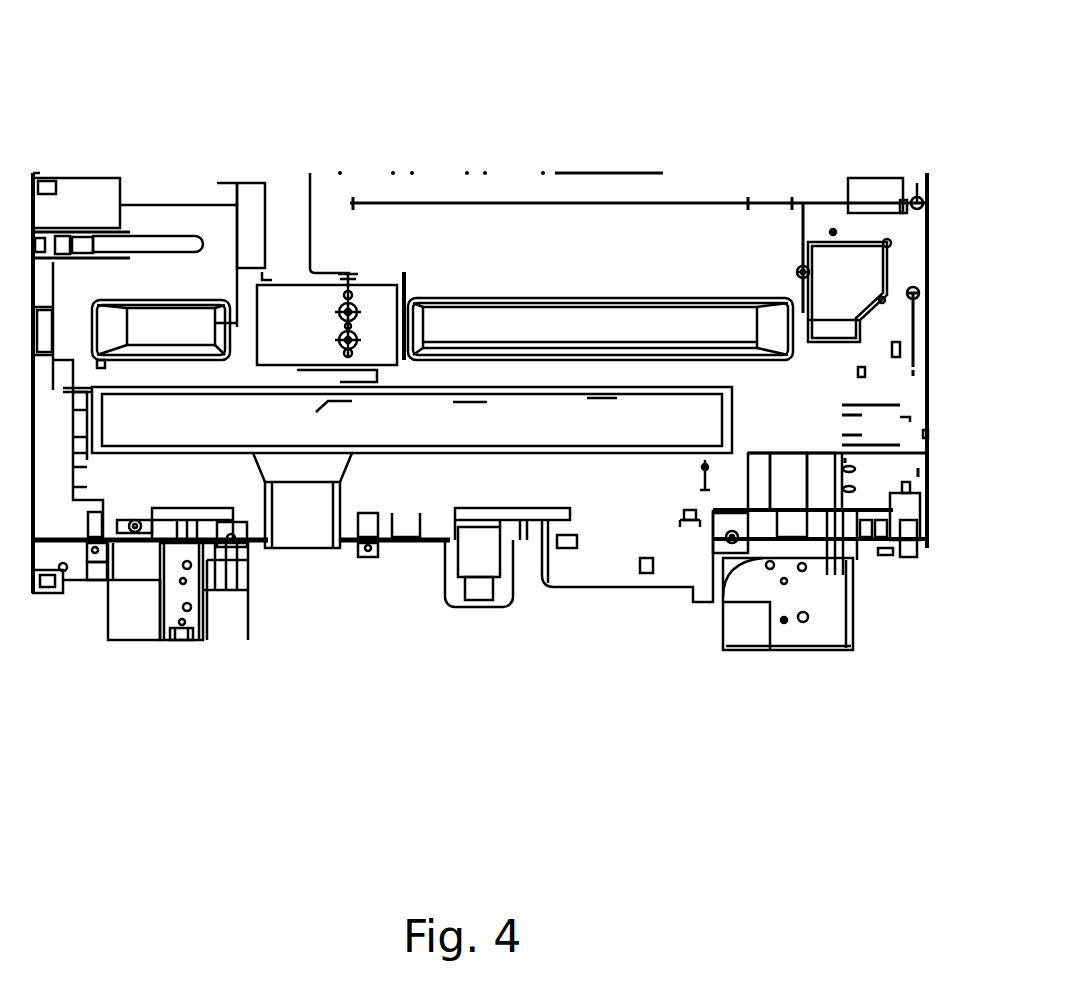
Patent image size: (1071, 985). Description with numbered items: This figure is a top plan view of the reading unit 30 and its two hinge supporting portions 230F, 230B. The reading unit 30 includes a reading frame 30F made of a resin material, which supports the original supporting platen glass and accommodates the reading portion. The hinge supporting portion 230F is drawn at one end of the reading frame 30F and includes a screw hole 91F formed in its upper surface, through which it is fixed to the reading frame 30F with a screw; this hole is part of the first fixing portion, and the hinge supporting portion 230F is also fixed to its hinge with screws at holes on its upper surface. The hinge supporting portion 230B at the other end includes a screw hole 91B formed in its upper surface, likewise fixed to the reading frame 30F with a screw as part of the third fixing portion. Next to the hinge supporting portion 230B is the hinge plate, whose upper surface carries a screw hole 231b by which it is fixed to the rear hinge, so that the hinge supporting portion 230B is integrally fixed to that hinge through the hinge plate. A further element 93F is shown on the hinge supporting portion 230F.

The reading unit 30 is at (331, 126).
The reading frame 30F is at (832, 205).
The screw hole 91B is at (102, 567).
The screw hole 91F is at (763, 558).
The front fixing pin 93F is at (784, 585).
The hinge supporting portion 230B is at (190, 592).
The hinge supporting portion 230F is at (835, 617).
The screw hole 231b is at (193, 638).